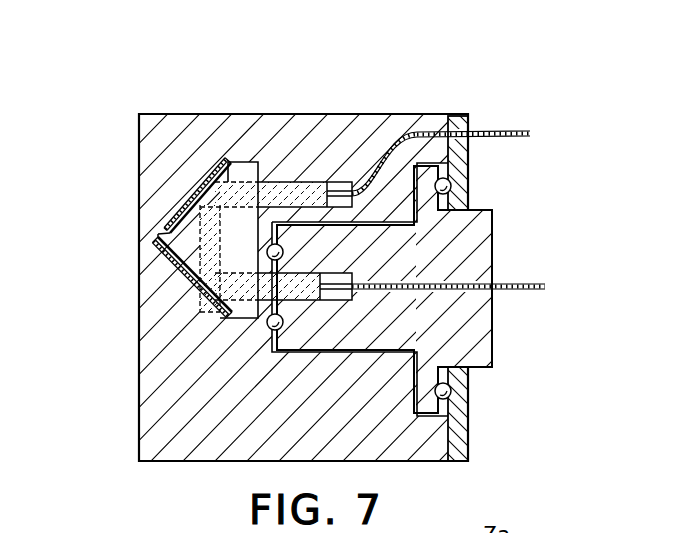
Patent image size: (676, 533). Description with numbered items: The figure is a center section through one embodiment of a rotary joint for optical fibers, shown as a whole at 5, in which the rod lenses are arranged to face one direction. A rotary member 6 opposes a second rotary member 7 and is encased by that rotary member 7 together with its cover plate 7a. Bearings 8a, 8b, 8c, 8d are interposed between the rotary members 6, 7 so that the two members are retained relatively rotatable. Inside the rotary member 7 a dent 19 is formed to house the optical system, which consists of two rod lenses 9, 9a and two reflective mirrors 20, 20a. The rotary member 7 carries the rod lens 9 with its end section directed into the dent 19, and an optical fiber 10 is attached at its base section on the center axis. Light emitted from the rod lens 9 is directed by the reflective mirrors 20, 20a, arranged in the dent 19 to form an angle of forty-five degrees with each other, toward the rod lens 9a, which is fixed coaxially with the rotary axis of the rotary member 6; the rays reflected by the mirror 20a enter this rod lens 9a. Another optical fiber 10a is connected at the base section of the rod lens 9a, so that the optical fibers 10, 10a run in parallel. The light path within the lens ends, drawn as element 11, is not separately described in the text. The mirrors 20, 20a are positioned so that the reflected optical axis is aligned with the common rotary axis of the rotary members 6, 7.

The optical switch 5 is at (212, 110).
The rotary member 6 is at (491, 225).
The rotary member 7 is at (384, 132).
The cover plate 7a is at (457, 118).
The bearing 8a is at (267, 251).
The bearing 8b is at (267, 323).
The bearing 8c is at (451, 188).
The bearing 8d is at (452, 397).
The rod lens 9 is at (290, 182).
The rod lens 9a is at (316, 273).
The optical fiber 10 is at (494, 131).
The optical fiber 10a is at (545, 288).
The optical fiber core 11 is at (338, 182).
The dent 19 is at (157, 234).
The reflective mirror 20 is at (176, 212).
The reflective mirror 20a is at (186, 278).